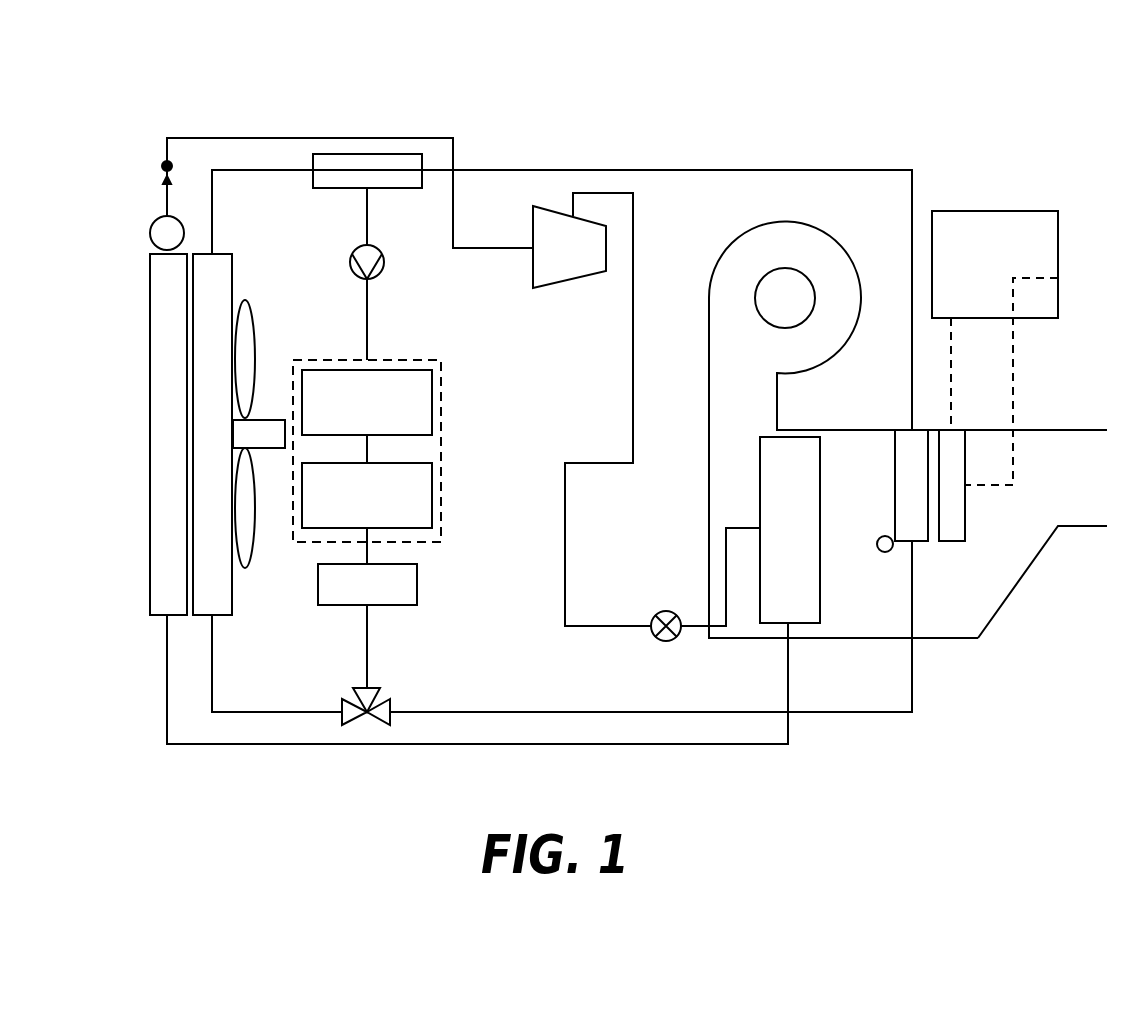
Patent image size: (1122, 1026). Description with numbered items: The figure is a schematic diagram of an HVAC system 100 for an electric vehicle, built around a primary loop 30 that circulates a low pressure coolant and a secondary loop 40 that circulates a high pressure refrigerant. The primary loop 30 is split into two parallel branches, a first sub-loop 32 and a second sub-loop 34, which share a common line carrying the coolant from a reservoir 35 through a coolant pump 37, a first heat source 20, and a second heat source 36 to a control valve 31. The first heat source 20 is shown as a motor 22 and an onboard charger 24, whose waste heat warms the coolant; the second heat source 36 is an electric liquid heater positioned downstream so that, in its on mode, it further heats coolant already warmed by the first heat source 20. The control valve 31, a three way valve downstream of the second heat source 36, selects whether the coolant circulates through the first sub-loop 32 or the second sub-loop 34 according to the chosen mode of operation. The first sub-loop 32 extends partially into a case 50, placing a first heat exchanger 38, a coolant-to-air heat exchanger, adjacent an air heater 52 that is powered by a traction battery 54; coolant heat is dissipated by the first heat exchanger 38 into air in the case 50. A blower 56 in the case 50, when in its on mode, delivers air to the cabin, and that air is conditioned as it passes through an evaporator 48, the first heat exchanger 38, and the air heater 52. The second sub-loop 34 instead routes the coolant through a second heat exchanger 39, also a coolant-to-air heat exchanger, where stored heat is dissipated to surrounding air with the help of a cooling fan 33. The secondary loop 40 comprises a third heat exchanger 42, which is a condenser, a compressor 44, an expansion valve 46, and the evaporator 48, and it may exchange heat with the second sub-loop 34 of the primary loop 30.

The HVAC system 100 is at (1088, 68).
The first heat source 20 is at (442, 421).
The motor 22 is at (433, 385).
The onboard charger 24 is at (433, 499).
The primary loop 30 is at (275, 169).
The control valve 31 is at (352, 697).
The first sub-loop 32 is at (852, 168).
The cooling fan 33 is at (256, 349).
The second sub-loop 34 is at (298, 168).
The reservoir 35 is at (404, 153).
The second heat source 36 is at (418, 585).
The coolant pump 37 is at (384, 260).
The first heat exchanger 38 is at (930, 543).
The second heat exchanger 39 is at (232, 280).
The secondary loop 40 is at (692, 746).
The third heat exchanger 42 is at (149, 307).
The compressor 44 is at (556, 210).
The expansion valve 46 is at (662, 610).
The evaporator 48 is at (821, 585).
The case 50 is at (1010, 605).
The air heater 52 is at (966, 515).
The traction battery 54 is at (1042, 210).
The blower 56 is at (738, 238).